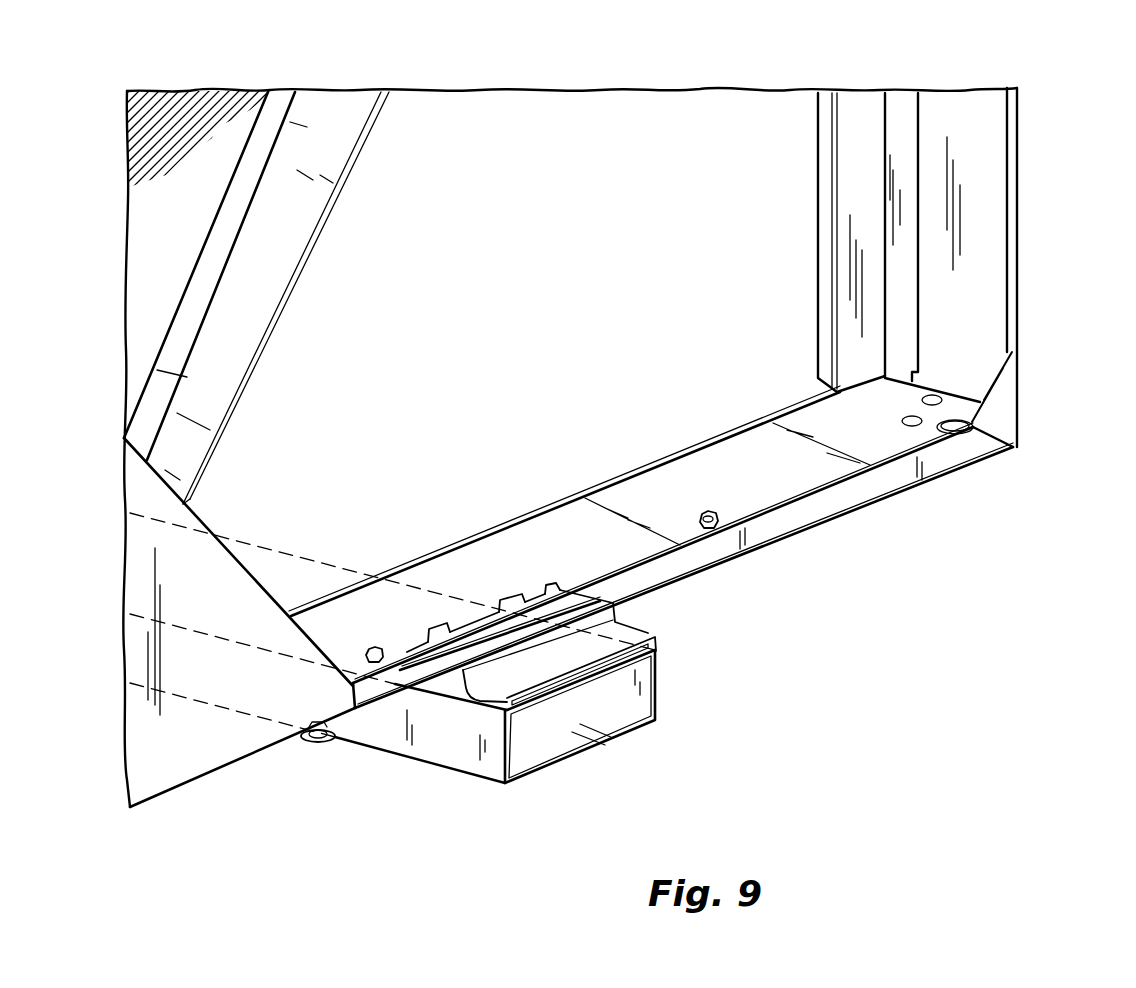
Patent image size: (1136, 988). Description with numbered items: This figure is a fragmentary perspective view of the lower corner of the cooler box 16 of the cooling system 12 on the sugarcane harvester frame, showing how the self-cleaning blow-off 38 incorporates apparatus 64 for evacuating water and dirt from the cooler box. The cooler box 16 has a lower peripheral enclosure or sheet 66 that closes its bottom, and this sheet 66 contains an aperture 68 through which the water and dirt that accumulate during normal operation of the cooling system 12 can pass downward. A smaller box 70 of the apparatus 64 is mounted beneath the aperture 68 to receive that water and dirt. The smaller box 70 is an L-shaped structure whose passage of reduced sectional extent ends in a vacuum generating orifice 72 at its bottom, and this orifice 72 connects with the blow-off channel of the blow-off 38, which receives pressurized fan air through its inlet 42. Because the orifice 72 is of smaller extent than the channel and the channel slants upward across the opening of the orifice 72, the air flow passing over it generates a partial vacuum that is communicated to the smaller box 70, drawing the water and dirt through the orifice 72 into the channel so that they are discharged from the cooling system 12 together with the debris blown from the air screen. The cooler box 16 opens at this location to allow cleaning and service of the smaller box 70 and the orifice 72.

The cooling system 12 is at (664, 71).
The cooler box 16 is at (1020, 130).
The self-cleaning blow-off 38 is at (662, 689).
The inlet 42 is at (352, 738).
The apparatus for evacuating water and dirt 64 is at (657, 633).
The lower peripheral enclosure or sheet 66 is at (770, 475).
The aperture 68 is at (540, 592).
The smaller box 70 is at (462, 700).
The vacuum generating orifice 72 is at (662, 642).